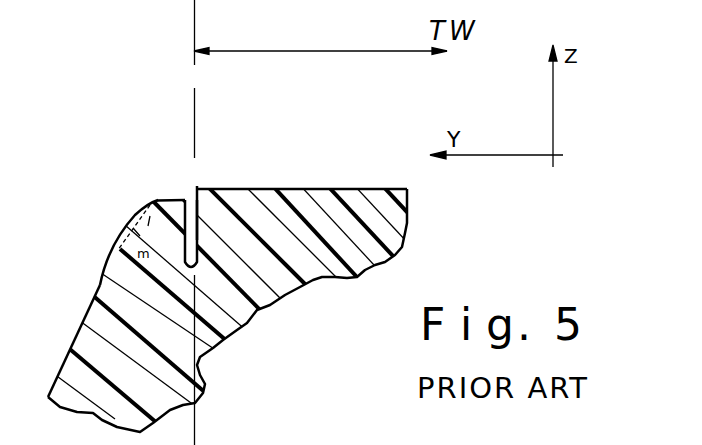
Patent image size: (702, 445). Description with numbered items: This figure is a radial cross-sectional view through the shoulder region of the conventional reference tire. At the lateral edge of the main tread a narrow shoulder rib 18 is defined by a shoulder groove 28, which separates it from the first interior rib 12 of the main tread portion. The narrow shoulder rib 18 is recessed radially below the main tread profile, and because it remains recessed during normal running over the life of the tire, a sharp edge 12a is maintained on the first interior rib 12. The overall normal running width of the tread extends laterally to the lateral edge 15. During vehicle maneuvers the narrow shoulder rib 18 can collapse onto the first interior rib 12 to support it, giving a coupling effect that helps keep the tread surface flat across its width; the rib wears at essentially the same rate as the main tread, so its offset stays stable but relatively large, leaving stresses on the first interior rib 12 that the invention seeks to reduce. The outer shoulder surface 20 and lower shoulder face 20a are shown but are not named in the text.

The first interior rib 12 is at (285, 189).
The sharp edge 12a is at (198, 209).
The lateral edge 15 is at (162, 199).
The narrow shoulder rib 18 is at (200, 182).
The curved shoulder surface 20 is at (150, 202).
The lower shoulder side face 20a is at (108, 256).
The shoulder groove 28 is at (220, 188).